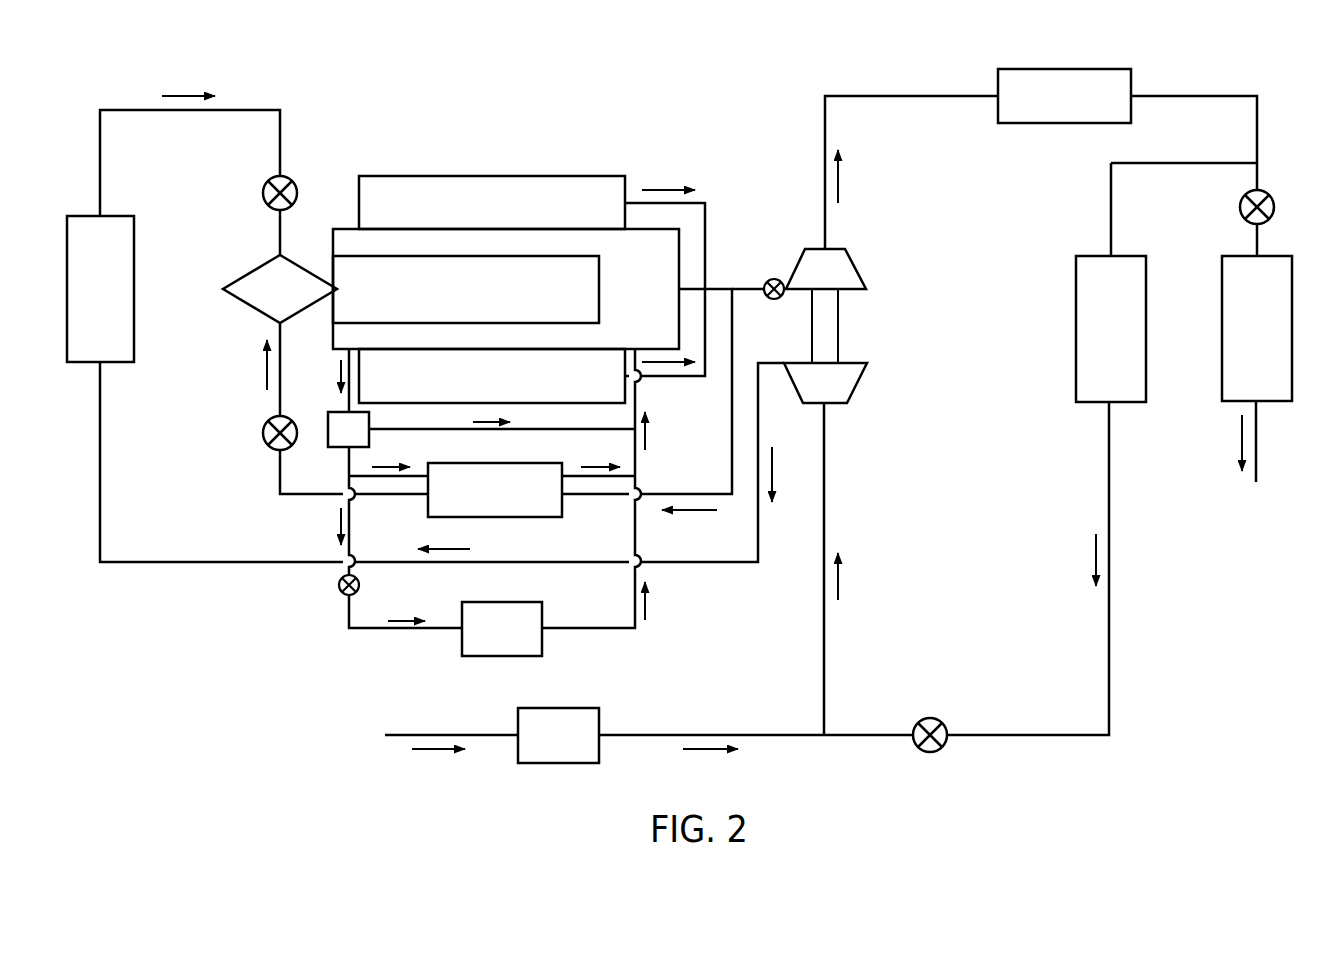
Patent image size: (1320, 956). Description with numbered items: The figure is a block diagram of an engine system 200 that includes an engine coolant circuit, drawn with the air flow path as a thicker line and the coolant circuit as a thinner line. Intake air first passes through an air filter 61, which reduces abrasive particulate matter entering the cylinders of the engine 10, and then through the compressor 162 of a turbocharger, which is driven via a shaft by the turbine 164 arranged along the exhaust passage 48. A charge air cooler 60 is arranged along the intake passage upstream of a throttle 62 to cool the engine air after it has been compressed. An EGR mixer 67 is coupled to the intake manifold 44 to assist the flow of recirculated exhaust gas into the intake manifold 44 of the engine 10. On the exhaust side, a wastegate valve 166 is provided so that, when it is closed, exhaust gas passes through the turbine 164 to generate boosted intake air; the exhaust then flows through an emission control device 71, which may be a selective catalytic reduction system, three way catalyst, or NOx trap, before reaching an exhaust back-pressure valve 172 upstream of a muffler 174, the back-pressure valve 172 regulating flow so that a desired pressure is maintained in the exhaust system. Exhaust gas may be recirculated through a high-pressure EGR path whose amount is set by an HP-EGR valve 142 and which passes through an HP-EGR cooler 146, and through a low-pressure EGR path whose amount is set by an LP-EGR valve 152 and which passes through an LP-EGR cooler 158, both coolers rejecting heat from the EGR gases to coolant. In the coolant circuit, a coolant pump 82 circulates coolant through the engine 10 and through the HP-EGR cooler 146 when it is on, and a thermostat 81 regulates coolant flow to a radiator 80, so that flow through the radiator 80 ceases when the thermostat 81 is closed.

The engine system 200 is at (648, 72).
The engine 10 is at (626, 300).
The intake manifold 44 is at (453, 300).
The exhaust passage 48 is at (478, 213).
The charge air cooler 60 is at (88, 300).
The air filter 61 is at (546, 746).
The throttle 62 is at (291, 178).
The EGR mixer 67 is at (268, 300).
The emission control device 71 is at (1052, 107).
The radiator 80 is at (490, 639).
The thermostat 81 is at (344, 596).
The coolant pump 82 is at (337, 440).
The HP-EGR valve 142 is at (265, 425).
The HP-EGR cooler 146 is at (477, 501).
The LP-EGR valve 152 is at (942, 722).
The LP-EGR cooler 158 is at (1093, 339).
The compressor 162 is at (807, 395).
The turbine 164 is at (807, 281).
The wastegate valve 166 is at (767, 281).
The exhaust back-pressure valve 172 is at (1268, 194).
The muffler 174 is at (1239, 339).